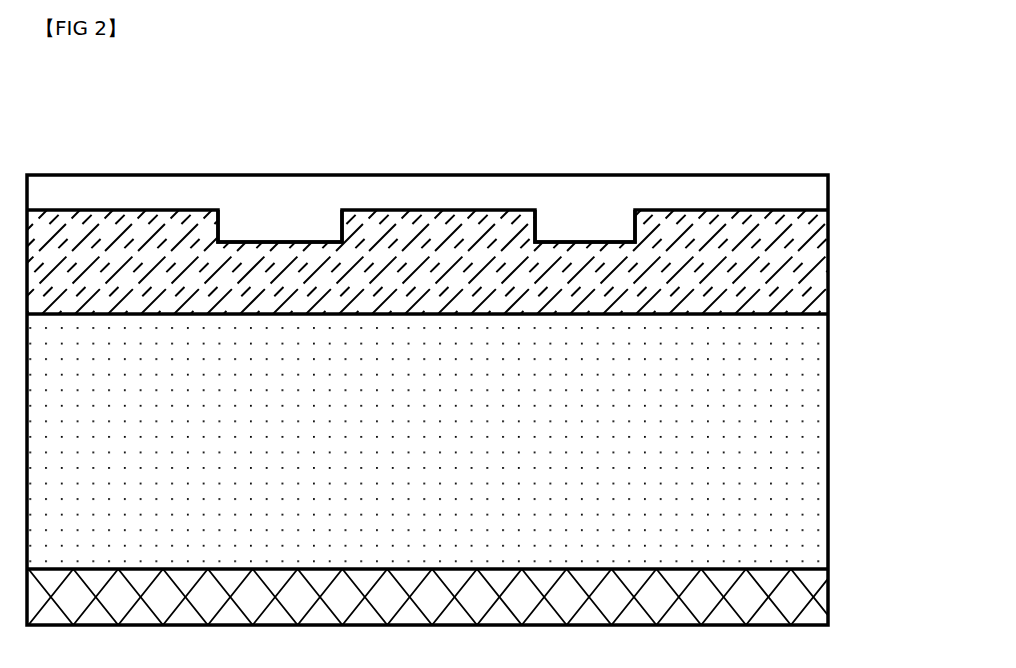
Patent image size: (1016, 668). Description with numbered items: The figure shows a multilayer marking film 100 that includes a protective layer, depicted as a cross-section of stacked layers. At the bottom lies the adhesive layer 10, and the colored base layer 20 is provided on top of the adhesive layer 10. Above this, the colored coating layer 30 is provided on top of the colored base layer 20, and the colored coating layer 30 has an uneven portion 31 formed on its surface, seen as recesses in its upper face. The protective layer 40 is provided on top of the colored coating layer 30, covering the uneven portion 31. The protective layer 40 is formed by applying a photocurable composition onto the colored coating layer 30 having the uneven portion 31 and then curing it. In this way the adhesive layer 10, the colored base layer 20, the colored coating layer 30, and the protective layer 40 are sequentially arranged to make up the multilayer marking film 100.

The multilayer marking film 100 is at (612, 148).
The adhesive layer 10 is at (822, 598).
The colored base layer 20 is at (822, 462).
The colored coating layer 30 is at (478, 208).
The uneven portion 31 is at (424, 212).
The protective layer 40 is at (822, 190).